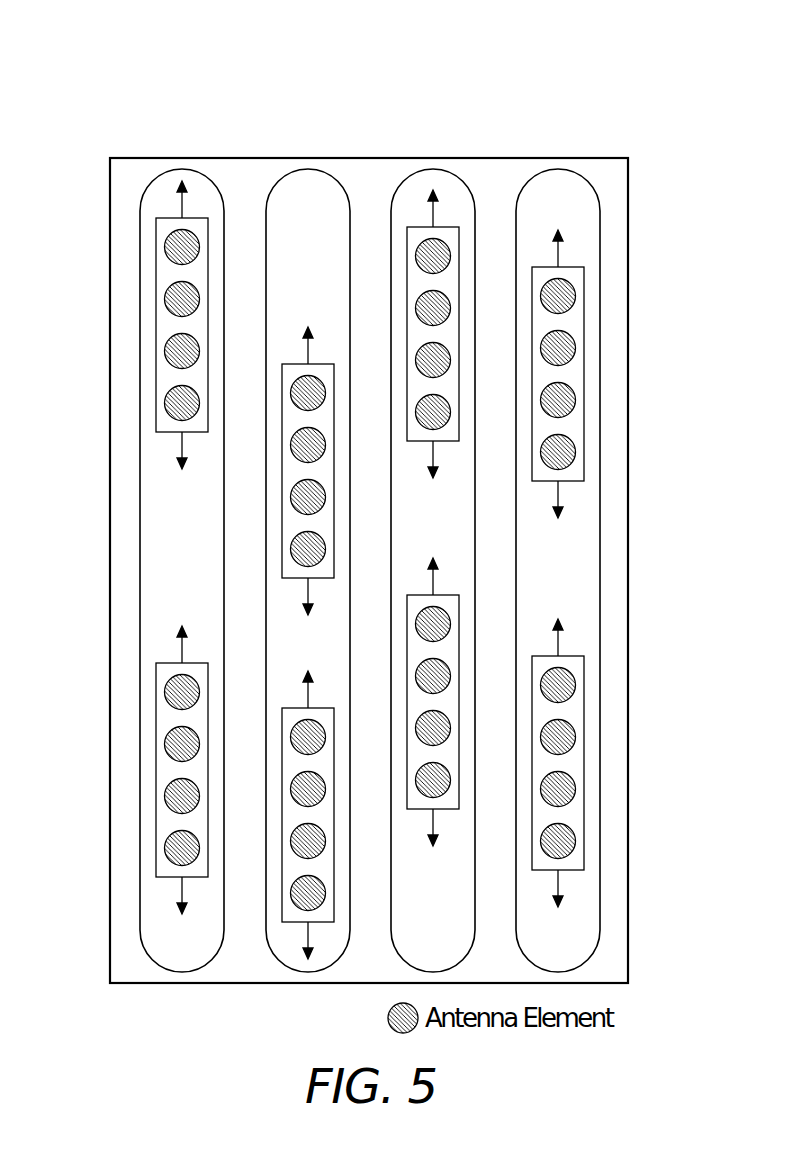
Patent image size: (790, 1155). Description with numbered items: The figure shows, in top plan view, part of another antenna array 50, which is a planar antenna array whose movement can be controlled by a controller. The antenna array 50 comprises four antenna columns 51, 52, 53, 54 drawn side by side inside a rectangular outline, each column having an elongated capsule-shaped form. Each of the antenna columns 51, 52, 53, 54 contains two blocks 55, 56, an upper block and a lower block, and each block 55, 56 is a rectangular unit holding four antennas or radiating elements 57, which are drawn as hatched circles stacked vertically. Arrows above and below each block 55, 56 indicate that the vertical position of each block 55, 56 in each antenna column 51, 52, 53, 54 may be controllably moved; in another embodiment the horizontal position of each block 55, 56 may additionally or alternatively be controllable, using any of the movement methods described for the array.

The antenna array 50 is at (96, 115).
The antenna column 51 is at (181, 170).
The antenna column 52 is at (306, 170).
The antenna column 53 is at (431, 170).
The antenna column 54 is at (601, 538).
The block 55 is at (609, 374).
The block 56 is at (584, 668).
The radiating element 57 is at (576, 396).